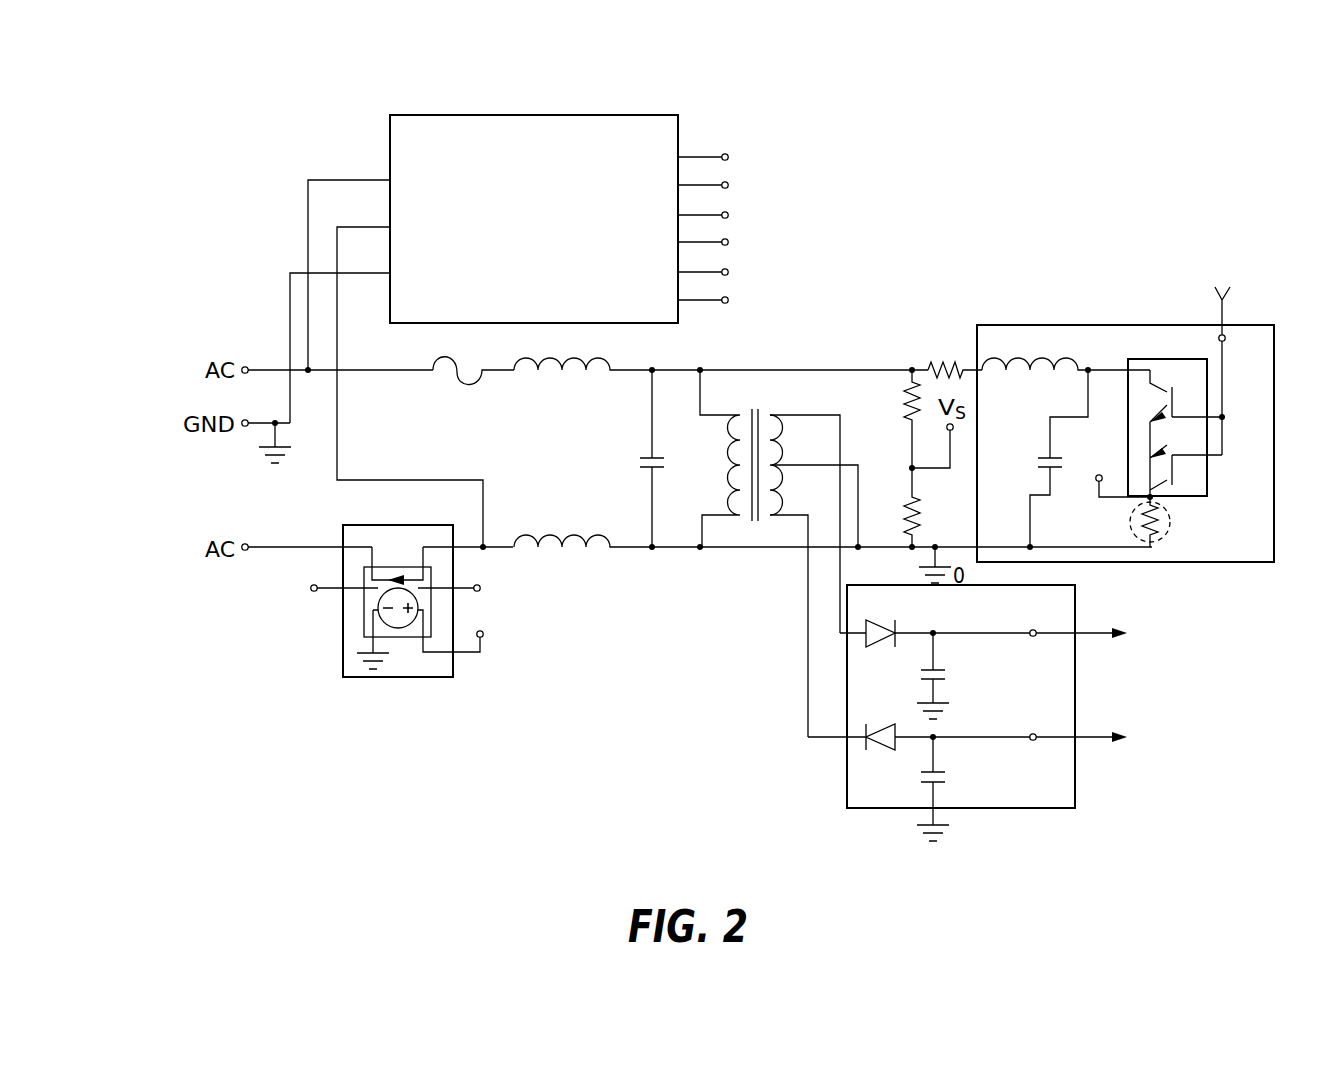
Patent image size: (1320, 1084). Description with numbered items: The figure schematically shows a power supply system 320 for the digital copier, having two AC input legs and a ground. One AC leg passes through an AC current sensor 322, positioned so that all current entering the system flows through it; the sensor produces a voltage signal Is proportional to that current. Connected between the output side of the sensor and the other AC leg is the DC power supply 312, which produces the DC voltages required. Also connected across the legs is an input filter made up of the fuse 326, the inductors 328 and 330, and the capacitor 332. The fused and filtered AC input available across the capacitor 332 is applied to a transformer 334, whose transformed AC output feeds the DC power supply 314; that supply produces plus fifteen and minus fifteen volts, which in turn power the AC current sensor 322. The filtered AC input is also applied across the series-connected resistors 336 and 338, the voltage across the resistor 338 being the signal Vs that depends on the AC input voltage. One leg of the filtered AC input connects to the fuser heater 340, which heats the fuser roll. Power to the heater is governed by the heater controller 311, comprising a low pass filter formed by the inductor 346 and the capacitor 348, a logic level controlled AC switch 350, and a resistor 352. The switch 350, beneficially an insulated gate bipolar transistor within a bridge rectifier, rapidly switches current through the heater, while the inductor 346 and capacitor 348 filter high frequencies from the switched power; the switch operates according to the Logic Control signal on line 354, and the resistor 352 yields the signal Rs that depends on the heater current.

The heater controller 311 is at (1107, 325).
The DC power supply 312 is at (678, 123).
The DC power supply 314 is at (1025, 810).
The power supply system 320 is at (866, 135).
The AC current sensor 322 is at (342, 631).
The fuse 326 is at (457, 382).
The inductor 328 is at (553, 364).
The inductor 330 is at (549, 538).
The capacitor 332 is at (642, 457).
The transformer 334 is at (762, 406).
The resistor 336 is at (907, 391).
The resistor 338 is at (913, 498).
The fuser heater 340 is at (942, 362).
The inductor 346 is at (1020, 362).
The capacitor 348 is at (1050, 483).
The logic level controlled AC switch 350 is at (1170, 358).
The resistor 352 is at (1166, 532).
The line 354 is at (1228, 312).